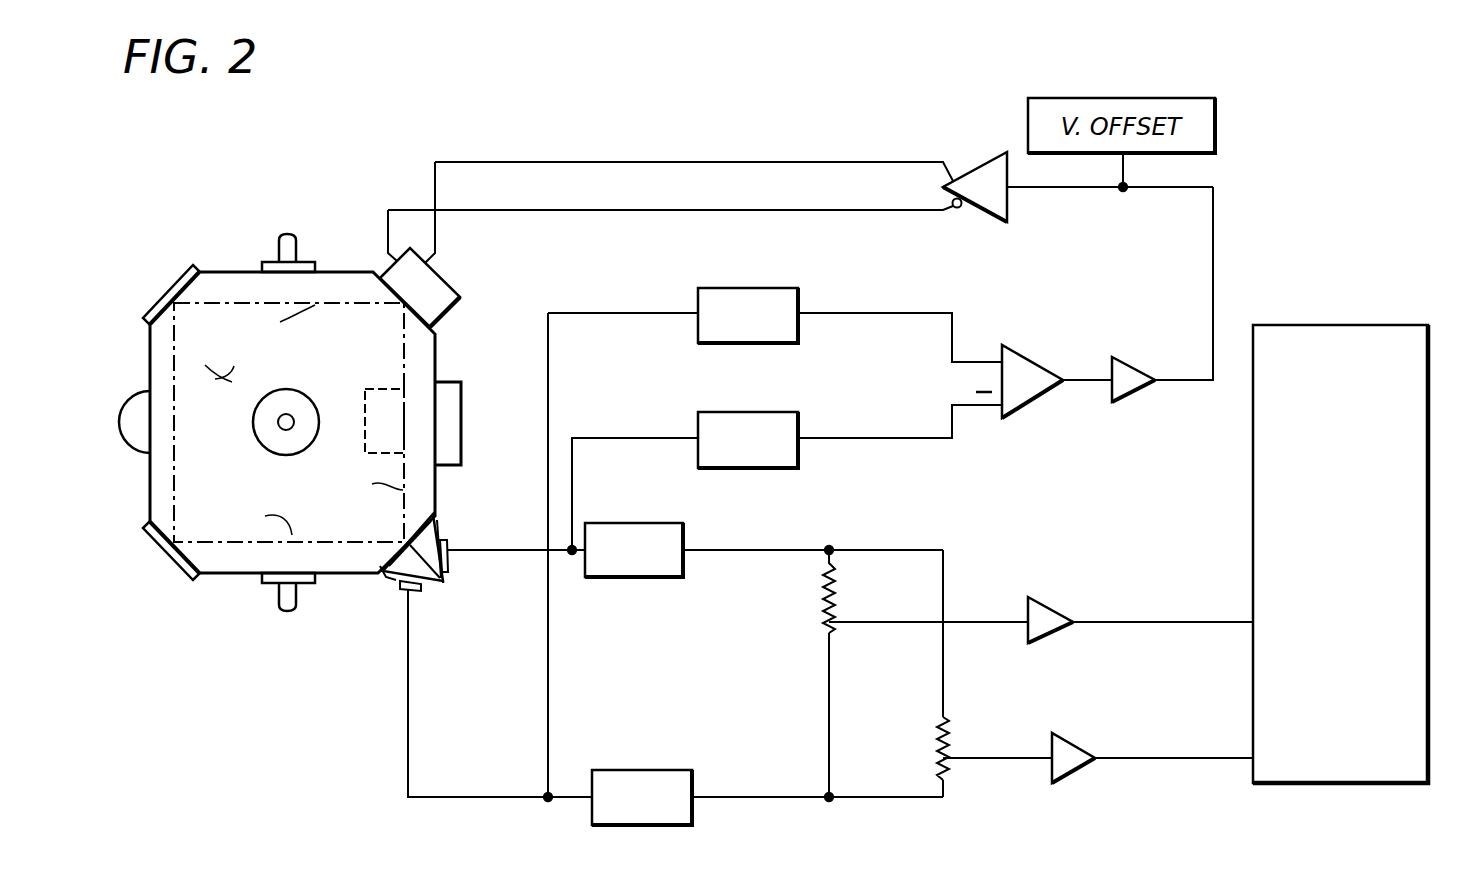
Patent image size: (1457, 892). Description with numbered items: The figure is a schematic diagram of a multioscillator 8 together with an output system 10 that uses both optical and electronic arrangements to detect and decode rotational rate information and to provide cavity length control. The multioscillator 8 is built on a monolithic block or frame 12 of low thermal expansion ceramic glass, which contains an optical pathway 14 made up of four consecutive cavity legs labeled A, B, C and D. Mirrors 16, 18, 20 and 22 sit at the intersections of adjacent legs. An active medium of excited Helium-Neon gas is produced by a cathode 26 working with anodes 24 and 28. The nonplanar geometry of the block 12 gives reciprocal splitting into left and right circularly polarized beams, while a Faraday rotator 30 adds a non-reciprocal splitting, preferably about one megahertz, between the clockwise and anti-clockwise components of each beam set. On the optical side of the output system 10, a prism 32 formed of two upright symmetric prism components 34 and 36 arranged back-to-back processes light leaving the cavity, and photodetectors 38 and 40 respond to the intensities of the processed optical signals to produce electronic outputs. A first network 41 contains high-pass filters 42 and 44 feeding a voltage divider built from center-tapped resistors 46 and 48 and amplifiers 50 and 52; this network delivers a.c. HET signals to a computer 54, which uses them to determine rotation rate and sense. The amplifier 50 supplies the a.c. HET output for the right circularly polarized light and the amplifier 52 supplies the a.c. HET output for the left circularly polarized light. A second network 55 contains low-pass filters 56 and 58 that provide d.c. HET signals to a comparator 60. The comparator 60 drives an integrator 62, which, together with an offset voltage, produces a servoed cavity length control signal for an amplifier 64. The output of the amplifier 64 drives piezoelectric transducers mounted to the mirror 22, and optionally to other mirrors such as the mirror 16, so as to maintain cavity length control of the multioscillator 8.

The multioscillator 8 is at (233, 232).
The output system 10 is at (415, 153).
The monolithic block or frame 12 is at (437, 352).
The optical pathway 14 is at (403, 343).
The mirror 16 is at (168, 291).
The mirror 18 is at (168, 551).
The mirror 20 is at (383, 570).
The mirror 22 is at (447, 290).
The anode 24 is at (282, 598).
The cathode 26 is at (134, 393).
The anode 28 is at (300, 256).
The Faraday rotator 30 is at (425, 420).
The prism 32 is at (452, 580).
The prism component 34 is at (400, 580).
The prism component 36 is at (435, 520).
The photodetector 38 is at (415, 590).
The photodetector 40 is at (447, 548).
The first network 41 is at (847, 527).
The high-pass filter 42 is at (643, 523).
The high-pass filter 44 is at (650, 770).
The center-tapped resistor 46 is at (820, 588).
The center-tapped resistor 48 is at (938, 737).
The amplifier 50 is at (1048, 608).
The amplifier 52 is at (1070, 752).
The computer 54 is at (1253, 477).
The second network 55 is at (880, 302).
The low-pass filter 56 is at (758, 288).
The low-pass filter 58 is at (753, 412).
The comparator 60 is at (1035, 362).
The integrator 62 is at (1135, 368).
The amplifier 64 is at (975, 162).